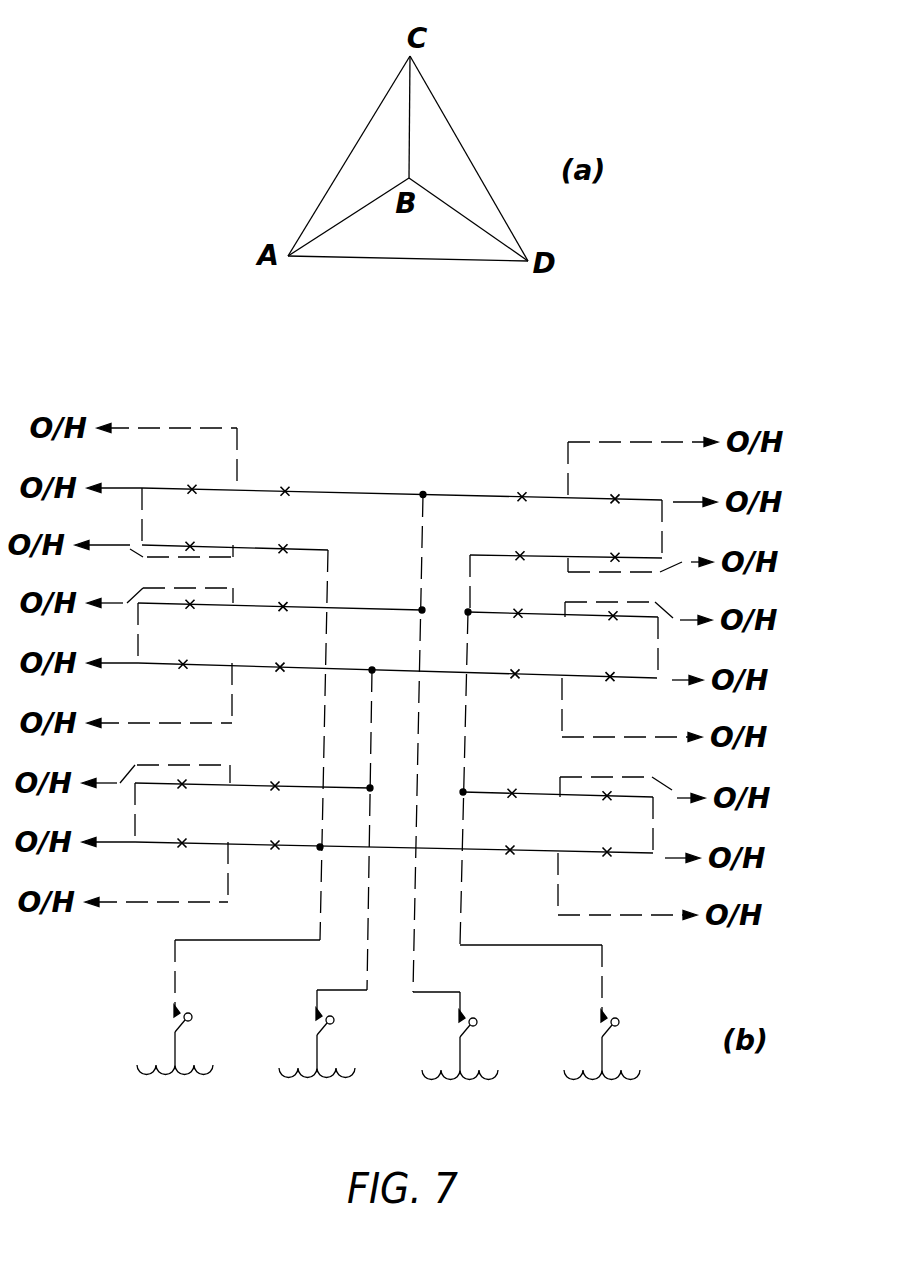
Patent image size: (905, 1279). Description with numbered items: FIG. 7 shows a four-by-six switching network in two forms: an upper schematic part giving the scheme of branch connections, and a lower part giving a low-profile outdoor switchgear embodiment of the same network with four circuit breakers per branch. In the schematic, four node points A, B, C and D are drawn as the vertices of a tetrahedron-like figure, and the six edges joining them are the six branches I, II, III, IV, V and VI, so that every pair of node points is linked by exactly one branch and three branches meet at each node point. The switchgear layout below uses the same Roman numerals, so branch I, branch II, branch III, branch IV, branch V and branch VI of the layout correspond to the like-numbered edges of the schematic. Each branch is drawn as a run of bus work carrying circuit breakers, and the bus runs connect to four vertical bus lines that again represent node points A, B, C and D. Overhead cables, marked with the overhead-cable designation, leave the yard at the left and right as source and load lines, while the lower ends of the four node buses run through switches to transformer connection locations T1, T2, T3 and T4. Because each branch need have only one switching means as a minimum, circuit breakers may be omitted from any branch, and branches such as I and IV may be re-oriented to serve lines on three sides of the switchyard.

The branch I is at (358, 138).
The branch II is at (409, 138).
The branch III is at (350, 212).
The branch IV is at (478, 170).
The branch V is at (468, 213).
The branch VI is at (463, 260).
The node point A is at (251, 777).
The node point B is at (344, 839).
The node point C is at (436, 752).
The node point D is at (547, 811).
The transformer connection location T1 is at (177, 1077).
The transformer connection location T2 is at (327, 1080).
The transformer connection location T3 is at (472, 1082).
The transformer connection location T4 is at (613, 1090).